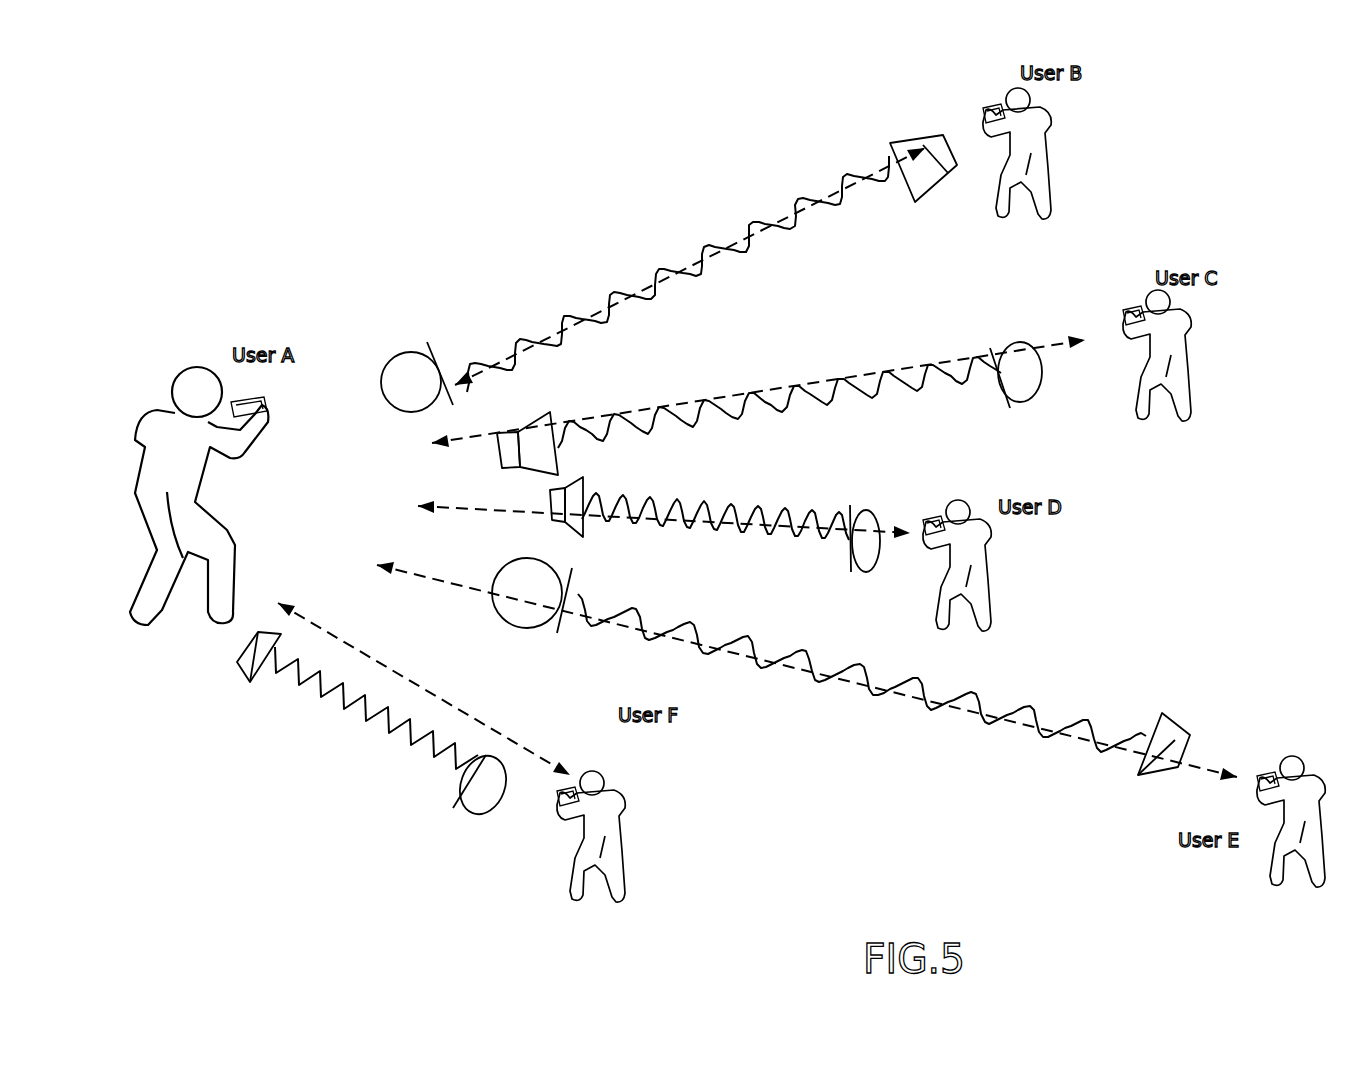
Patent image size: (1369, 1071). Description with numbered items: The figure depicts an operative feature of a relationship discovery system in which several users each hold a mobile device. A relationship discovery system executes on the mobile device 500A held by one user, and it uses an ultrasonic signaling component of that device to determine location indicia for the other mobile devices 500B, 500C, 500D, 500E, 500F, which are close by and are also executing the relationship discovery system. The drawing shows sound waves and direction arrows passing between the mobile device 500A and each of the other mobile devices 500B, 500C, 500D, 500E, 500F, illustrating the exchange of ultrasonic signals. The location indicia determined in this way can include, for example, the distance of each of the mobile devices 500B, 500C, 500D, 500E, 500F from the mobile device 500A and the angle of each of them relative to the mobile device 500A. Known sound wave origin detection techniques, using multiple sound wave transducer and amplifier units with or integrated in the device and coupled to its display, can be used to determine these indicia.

The mobile device 500A is at (268, 410).
The mobile device 500B is at (985, 107).
The mobile device 500C is at (1126, 310).
The mobile device 500D is at (926, 520).
The mobile device 500E is at (1262, 777).
The mobile device 500F is at (558, 792).